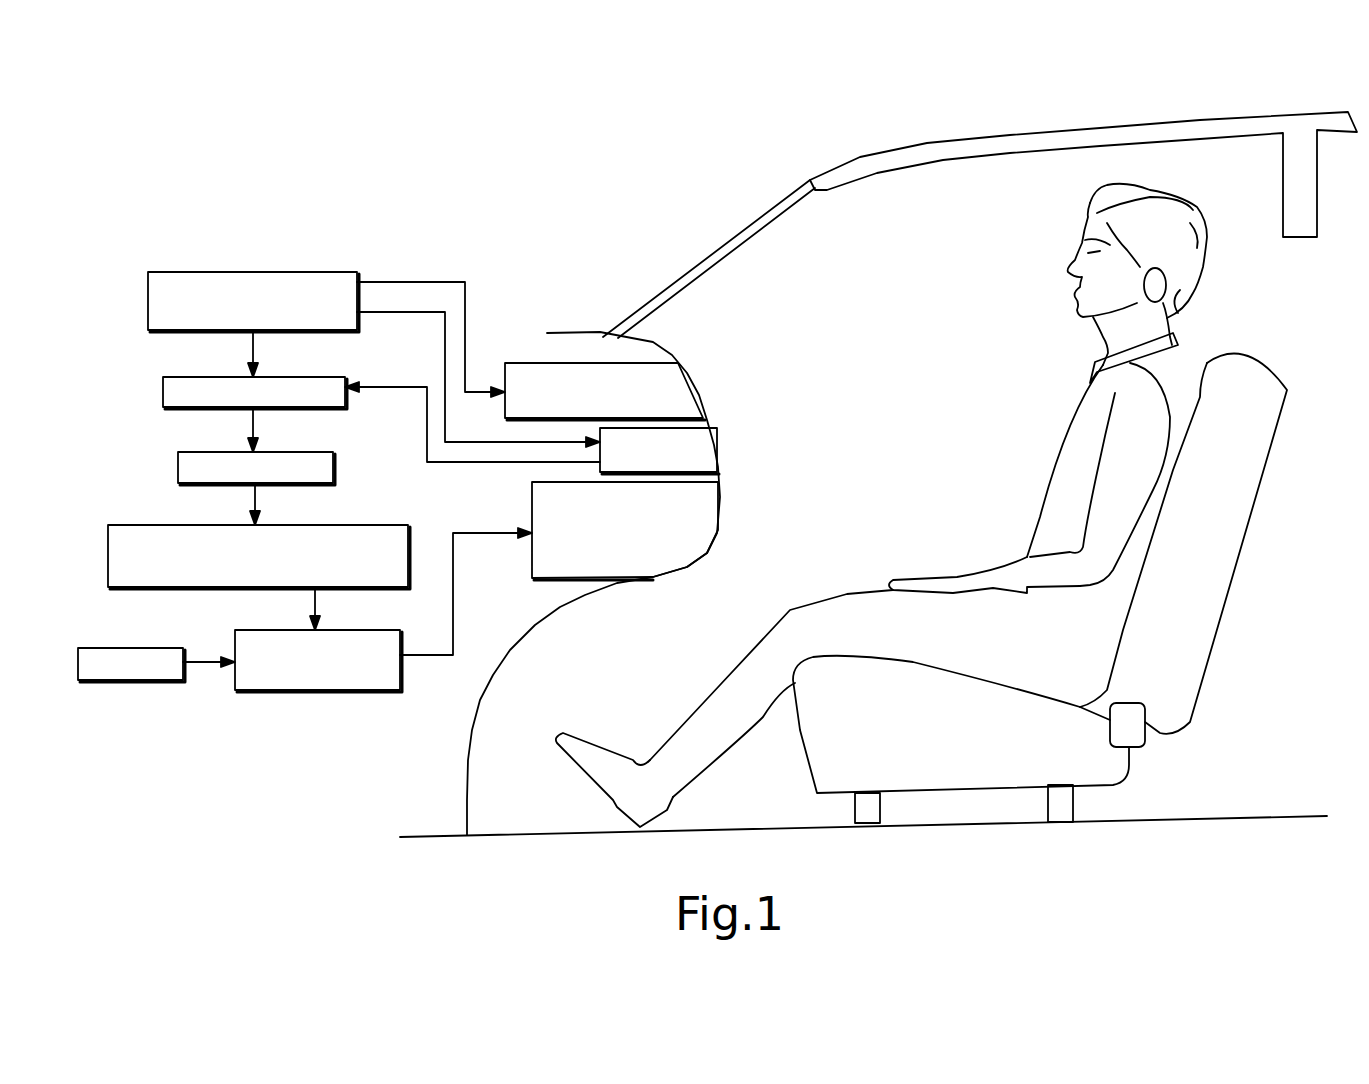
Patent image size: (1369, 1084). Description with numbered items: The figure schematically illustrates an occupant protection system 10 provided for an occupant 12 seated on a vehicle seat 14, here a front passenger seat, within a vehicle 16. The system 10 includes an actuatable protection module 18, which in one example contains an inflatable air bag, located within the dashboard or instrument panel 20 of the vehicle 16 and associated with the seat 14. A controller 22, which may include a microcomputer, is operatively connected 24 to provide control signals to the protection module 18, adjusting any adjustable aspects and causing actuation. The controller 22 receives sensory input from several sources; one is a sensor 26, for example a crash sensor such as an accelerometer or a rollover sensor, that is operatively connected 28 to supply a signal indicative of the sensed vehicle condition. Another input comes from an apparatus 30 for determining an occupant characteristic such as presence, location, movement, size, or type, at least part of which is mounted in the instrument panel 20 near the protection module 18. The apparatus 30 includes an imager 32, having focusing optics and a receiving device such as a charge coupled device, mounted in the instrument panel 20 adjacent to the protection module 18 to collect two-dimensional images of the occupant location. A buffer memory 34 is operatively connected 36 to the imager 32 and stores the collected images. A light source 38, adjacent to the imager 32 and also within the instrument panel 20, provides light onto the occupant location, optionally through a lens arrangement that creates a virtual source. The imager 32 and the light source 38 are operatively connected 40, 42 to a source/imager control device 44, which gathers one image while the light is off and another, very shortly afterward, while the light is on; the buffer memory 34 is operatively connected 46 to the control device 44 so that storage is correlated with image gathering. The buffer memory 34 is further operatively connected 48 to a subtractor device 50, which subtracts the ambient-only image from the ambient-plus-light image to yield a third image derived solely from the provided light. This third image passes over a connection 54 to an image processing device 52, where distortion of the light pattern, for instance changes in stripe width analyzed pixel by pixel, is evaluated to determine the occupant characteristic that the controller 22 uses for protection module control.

The occupant protection system 10 is at (116, 768).
The occupant 12 is at (1178, 225).
The vehicle seat 14 is at (1270, 357).
The vehicle 16 is at (1228, 122).
The protection module 18 is at (705, 565).
The instrument panel 20 is at (655, 342).
The controller 22 is at (384, 632).
The operative connection 24 is at (454, 593).
The sensor 26 is at (85, 648).
The operative connection 28 is at (200, 667).
The apparatus for determining a vehicle occupant characteristic 30 is at (720, 345).
The imager 32 is at (715, 452).
The buffer memory 34 is at (172, 380).
The operative connection 36 is at (385, 388).
The light source 38 is at (517, 372).
The operative connection 40 is at (388, 316).
The operative connection 42 is at (382, 280).
The source/imager control device 44 is at (160, 280).
The operative connection 46 is at (258, 346).
The operative connection 48 is at (258, 422).
The subtractor device 50 is at (182, 456).
The image processing device 52 is at (125, 536).
The operative connection 54 is at (259, 498).